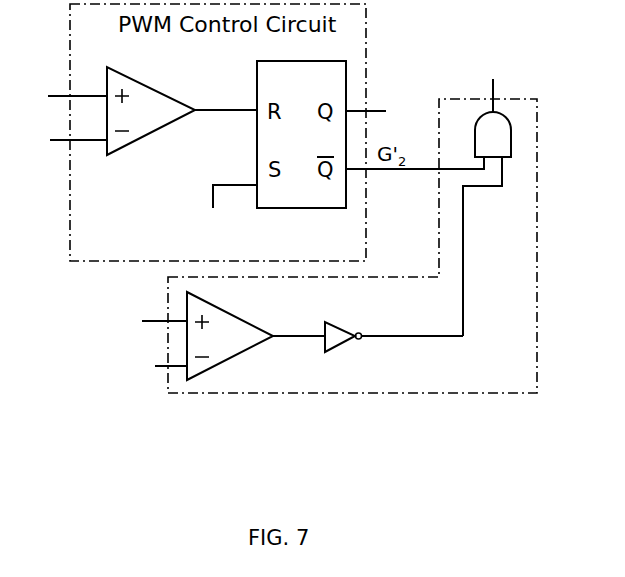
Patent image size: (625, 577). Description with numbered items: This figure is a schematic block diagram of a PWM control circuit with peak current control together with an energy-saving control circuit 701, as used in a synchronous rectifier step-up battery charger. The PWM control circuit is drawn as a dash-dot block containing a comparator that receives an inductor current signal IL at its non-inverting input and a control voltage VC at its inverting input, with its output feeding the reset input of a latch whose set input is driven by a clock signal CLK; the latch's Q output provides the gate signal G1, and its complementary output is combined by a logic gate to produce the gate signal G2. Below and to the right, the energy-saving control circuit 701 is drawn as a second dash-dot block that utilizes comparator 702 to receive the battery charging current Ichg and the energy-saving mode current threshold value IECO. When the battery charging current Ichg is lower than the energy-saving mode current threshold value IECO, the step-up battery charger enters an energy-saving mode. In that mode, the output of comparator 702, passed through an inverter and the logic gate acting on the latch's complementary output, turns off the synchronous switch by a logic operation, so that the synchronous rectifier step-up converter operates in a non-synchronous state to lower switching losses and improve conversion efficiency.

The energy-saving control circuit 701 is at (350, 394).
The comparator 702 is at (253, 350).
The gate signal G1 is at (381, 108).
The gate signal G2 is at (495, 83).
The clock signal CLK is at (224, 213).
The inductor current signal IL is at (67, 98).
The compensation voltage VC is at (63, 142).
The battery charging current Ichg is at (149, 322).
The energy-saving mode current threshold value IECO is at (148, 367).